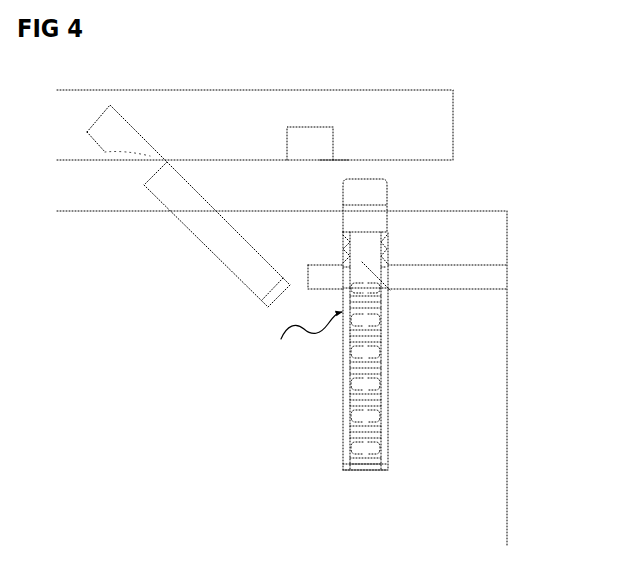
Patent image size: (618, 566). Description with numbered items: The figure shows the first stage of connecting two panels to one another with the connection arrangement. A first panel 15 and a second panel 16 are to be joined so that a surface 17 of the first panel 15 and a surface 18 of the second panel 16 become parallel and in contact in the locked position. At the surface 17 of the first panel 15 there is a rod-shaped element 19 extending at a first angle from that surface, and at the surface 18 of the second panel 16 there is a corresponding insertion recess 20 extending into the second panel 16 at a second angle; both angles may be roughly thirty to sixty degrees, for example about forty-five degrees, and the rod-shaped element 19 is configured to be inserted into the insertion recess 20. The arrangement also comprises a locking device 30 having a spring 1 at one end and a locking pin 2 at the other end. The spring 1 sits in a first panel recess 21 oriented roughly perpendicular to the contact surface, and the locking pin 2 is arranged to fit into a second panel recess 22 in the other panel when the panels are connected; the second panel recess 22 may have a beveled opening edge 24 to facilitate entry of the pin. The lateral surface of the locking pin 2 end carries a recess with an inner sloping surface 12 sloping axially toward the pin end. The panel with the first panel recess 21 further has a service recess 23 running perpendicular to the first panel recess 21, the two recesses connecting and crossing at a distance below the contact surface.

The spring 1 is at (367, 403).
The locking pin 2 is at (350, 220).
The inner sloping surface 12 is at (361, 262).
The first panel 15 is at (495, 380).
The second panel 16 is at (430, 140).
The surface of the first panel 17 is at (492, 212).
The surface of the second panel 18 is at (430, 162).
The rod-shaped element 19 is at (168, 202).
The insertion recess 20 is at (127, 121).
The first panel recess 21 is at (388, 443).
The second panel recess 22 is at (287, 147).
The service recess 23 is at (470, 292).
The beveled opening edge 24 is at (337, 158).
The locking device 30 is at (296, 338).